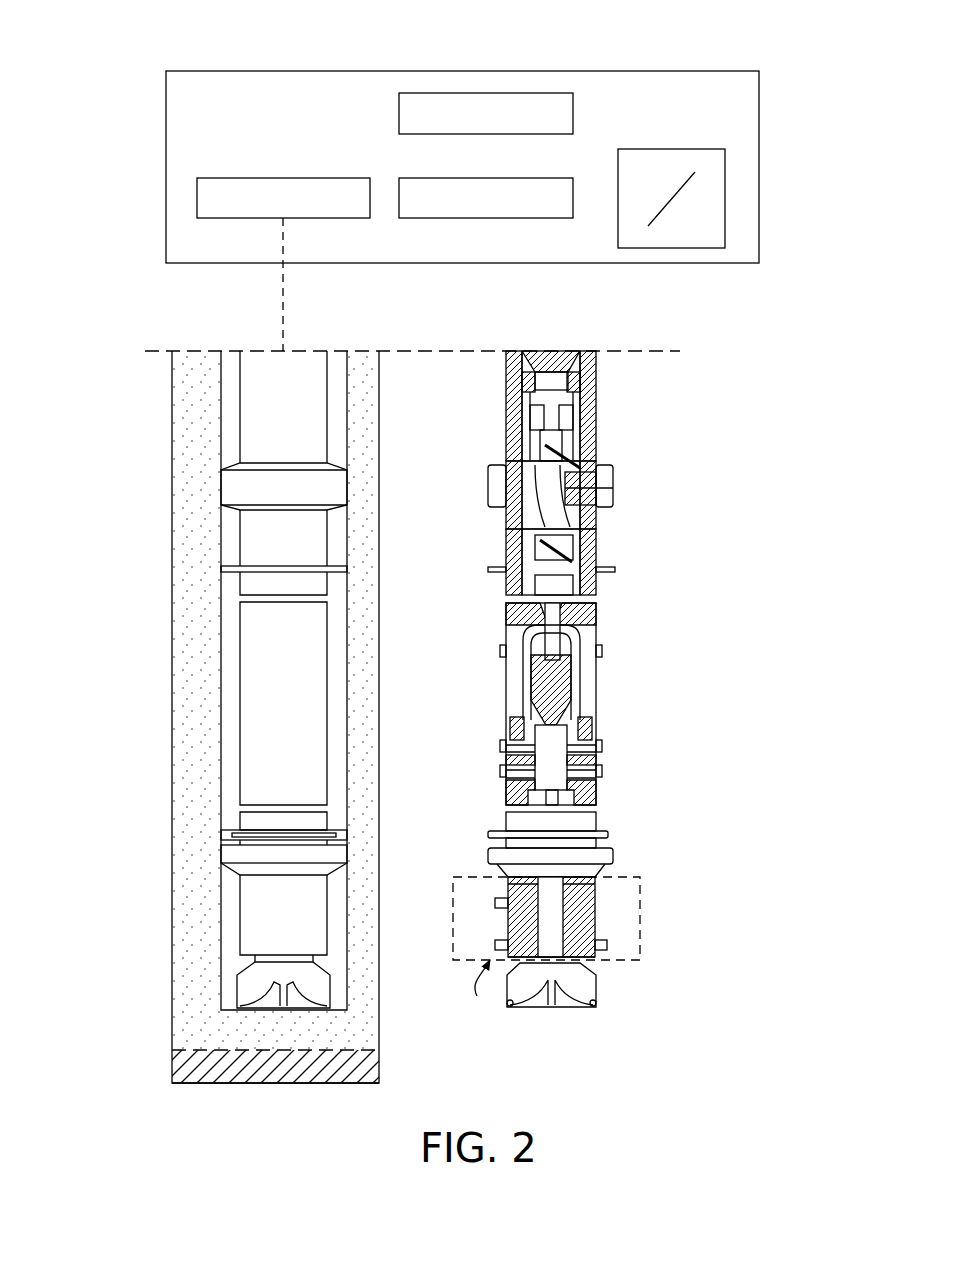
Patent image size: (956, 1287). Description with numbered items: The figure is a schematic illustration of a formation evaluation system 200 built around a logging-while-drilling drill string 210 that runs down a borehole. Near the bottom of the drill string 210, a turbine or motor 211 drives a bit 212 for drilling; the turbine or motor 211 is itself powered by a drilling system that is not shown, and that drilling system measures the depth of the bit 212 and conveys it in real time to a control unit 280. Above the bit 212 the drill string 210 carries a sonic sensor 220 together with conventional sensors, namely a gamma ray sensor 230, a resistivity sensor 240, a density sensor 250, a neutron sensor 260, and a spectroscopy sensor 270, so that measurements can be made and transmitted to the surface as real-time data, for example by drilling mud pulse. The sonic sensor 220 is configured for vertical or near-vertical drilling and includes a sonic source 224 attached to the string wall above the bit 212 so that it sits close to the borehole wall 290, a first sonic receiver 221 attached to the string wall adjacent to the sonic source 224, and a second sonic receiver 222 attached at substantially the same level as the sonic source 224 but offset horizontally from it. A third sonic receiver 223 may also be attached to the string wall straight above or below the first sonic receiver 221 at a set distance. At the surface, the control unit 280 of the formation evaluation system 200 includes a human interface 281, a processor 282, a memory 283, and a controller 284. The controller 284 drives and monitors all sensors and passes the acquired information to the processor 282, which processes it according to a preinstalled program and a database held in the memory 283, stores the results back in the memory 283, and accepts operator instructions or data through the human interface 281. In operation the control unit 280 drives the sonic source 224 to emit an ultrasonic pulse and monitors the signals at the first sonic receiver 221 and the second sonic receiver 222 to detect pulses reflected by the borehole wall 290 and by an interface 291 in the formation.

The formation evaluation system 200 is at (158, 50).
The control unit 280 is at (668, 71).
The memory 283 is at (545, 93).
The processor 282 is at (485, 218).
The controller 284 is at (197, 198).
The human interface 281 is at (725, 199).
The drill string 210 is at (146, 436).
The interface 291 is at (385, 1050).
The borehole wall 290 is at (248, 1003).
The spectroscopy sensor 270 is at (628, 443).
The neutron sensor 260 is at (628, 477).
The density sensor 250 is at (630, 506).
The turbine or motor 211 is at (575, 685).
The resistivity sensor 240 is at (608, 834).
The gamma ray sensor 230 is at (623, 867).
The sonic sensor 220 is at (656, 930).
The third sonic receiver R3 223 is at (496, 903).
The first sonic receiver R1 221 is at (495, 946).
The second sonic receiver R2 222 is at (607, 945).
The sonic source S 224 is at (482, 1010).
The bit 212 is at (604, 996).